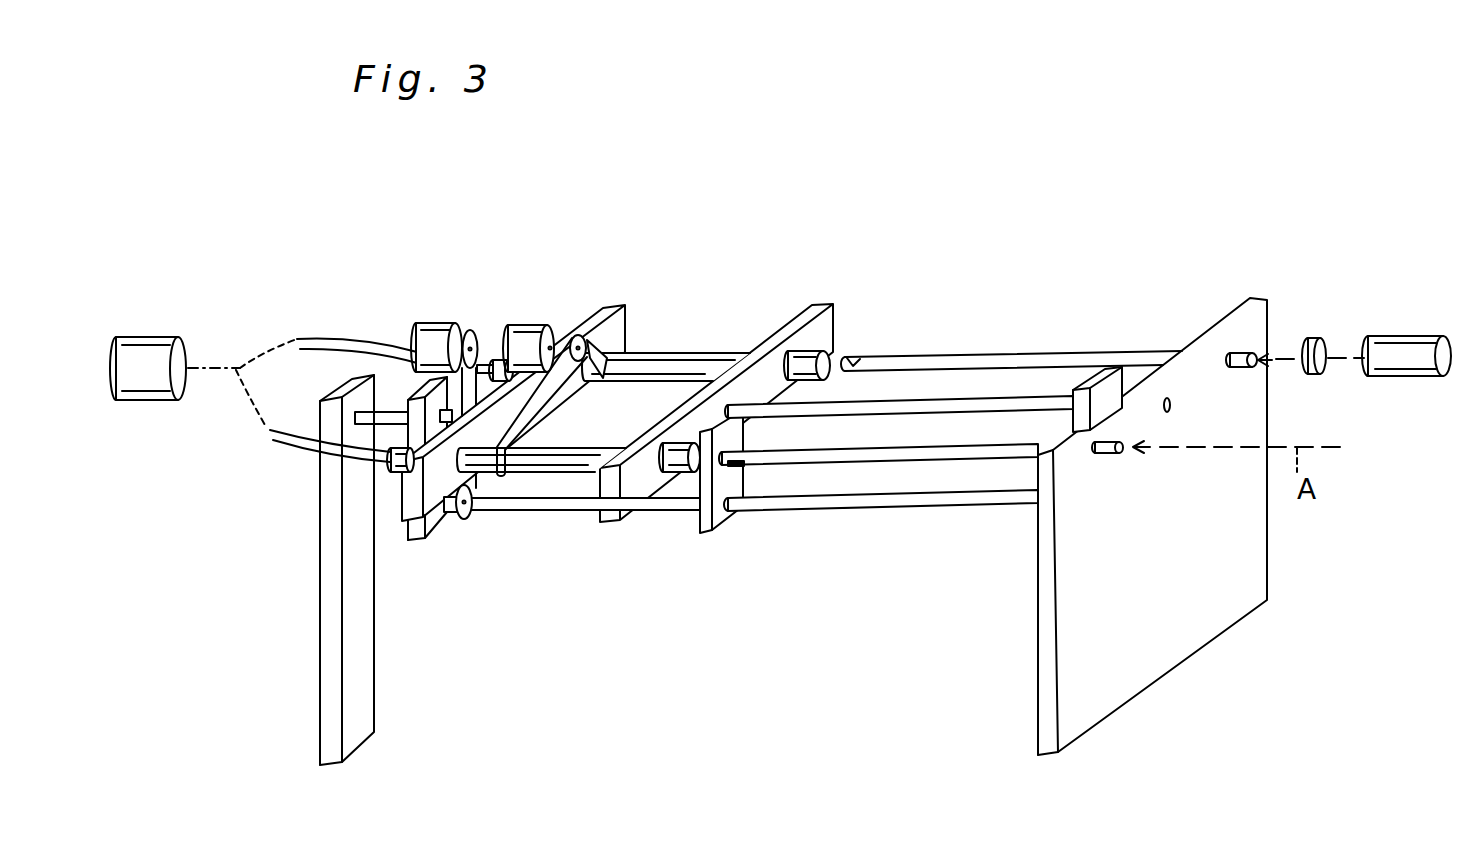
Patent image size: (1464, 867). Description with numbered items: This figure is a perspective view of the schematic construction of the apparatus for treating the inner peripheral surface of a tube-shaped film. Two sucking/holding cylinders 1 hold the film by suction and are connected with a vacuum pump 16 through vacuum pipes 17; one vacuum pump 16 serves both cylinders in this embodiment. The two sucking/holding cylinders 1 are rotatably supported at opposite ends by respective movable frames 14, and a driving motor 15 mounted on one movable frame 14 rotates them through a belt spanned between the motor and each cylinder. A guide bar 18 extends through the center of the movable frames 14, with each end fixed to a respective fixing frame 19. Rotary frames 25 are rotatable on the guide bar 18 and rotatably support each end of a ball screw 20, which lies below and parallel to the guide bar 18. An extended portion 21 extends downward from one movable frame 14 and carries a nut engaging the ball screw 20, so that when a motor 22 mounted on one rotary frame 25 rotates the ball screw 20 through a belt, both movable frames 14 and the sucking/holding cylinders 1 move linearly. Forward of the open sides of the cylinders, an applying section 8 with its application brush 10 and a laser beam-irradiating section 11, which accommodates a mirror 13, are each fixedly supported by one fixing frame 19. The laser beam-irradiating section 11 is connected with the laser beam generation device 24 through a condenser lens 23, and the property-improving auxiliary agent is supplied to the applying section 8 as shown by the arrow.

The sucking/holding cylinder 1 is at (672, 357).
The applying section 8 is at (812, 453).
The application brush 10 is at (736, 466).
The laser beam-irradiating section 11 is at (1072, 357).
The mirror 13 is at (856, 353).
The movable frame 14 is at (618, 307).
The driving motor 15 is at (540, 326).
The vacuum pump 16 is at (167, 337).
The vacuum pipe 17 is at (347, 338).
The guide bar 18 is at (933, 400).
The fixing frame 19 is at (368, 703).
The ball screw 20 is at (921, 498).
The extended portion 21 is at (703, 533).
The motor 22 is at (443, 327).
The condenser lens 23 is at (1318, 340).
The laser beam generation device 24 is at (1398, 337).
The rotary frame 25 is at (443, 520).